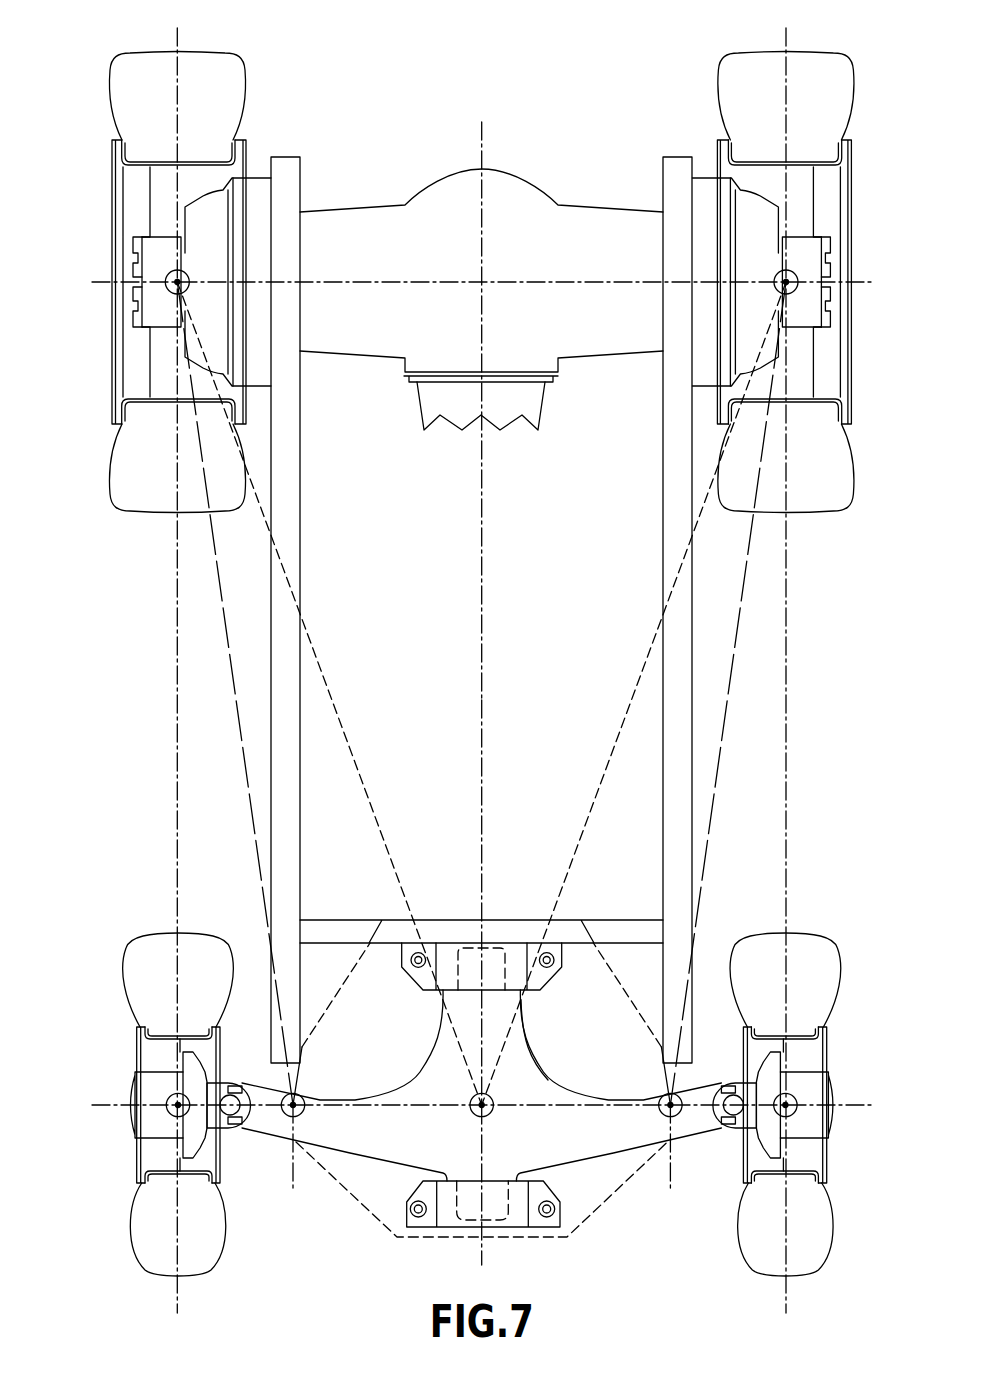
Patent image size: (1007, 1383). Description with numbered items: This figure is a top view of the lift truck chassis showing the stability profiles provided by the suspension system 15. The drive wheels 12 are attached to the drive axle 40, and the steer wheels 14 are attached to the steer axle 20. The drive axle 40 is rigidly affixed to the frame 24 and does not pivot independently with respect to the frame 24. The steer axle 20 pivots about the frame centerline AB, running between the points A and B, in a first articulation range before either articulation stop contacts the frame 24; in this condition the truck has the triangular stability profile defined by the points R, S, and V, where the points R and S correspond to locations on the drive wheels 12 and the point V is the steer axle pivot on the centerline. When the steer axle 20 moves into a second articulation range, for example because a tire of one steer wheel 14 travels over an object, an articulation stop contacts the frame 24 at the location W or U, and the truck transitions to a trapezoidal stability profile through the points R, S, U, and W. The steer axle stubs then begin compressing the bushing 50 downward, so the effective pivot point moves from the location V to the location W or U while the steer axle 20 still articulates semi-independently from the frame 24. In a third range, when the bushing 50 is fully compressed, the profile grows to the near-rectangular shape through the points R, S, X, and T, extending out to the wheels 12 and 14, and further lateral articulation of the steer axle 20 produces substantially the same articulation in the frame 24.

The drive wheels 12 is at (96, 99).
The steer wheels 14 is at (122, 1228).
The suspension system 15 is at (516, 610).
The steer axle 20 is at (481, 1091).
The frame 24 is at (620, 968).
The drive axle 40 is at (596, 215).
The bushing 50 is at (513, 948).
The point R is at (170, 287).
The point S is at (793, 287).
The point T is at (797, 1106).
The point U is at (660, 1113).
The point V is at (492, 1113).
The point W is at (302, 1114).
The point X is at (167, 1109).
The frame centerline endpoint A is at (481, 996).
The frame centerline endpoint B is at (481, 395).